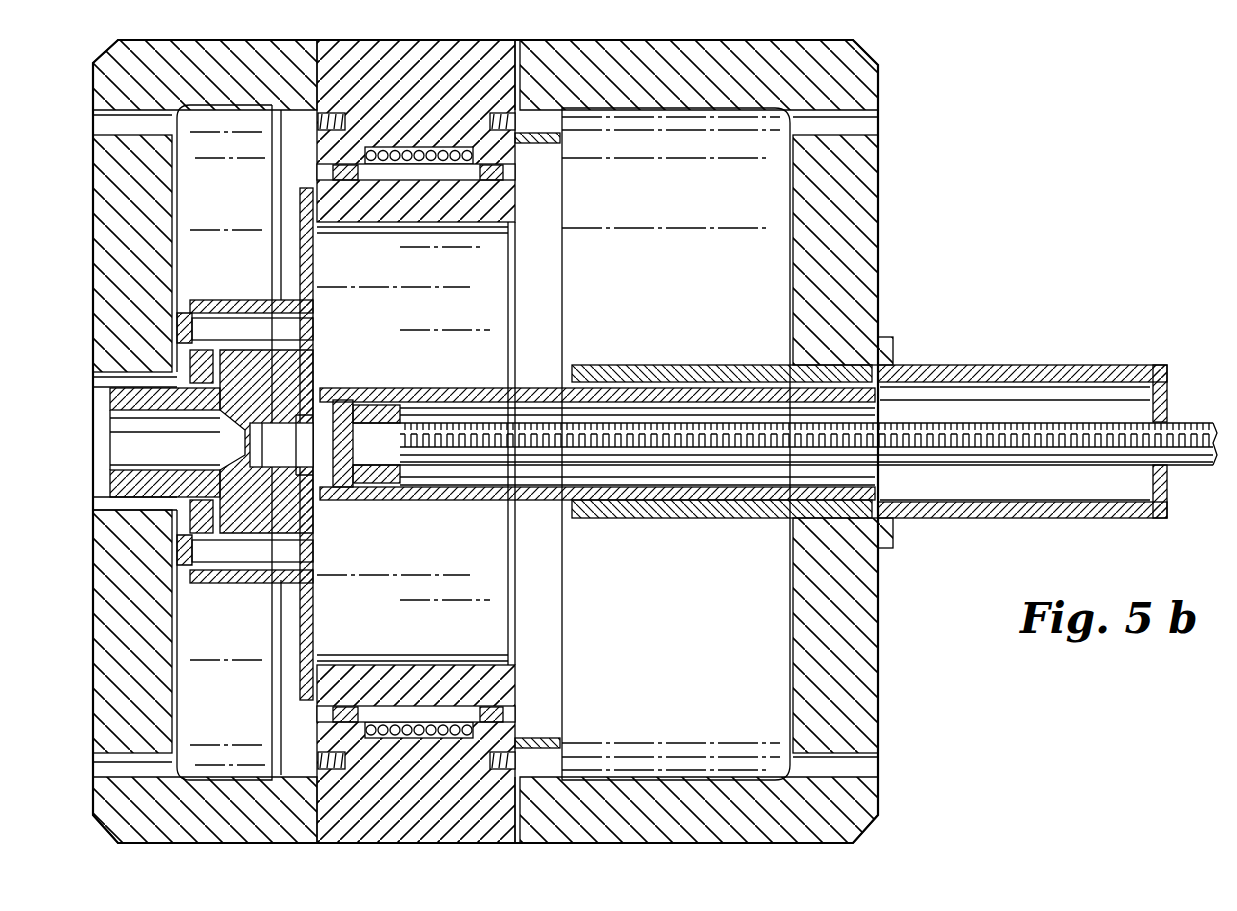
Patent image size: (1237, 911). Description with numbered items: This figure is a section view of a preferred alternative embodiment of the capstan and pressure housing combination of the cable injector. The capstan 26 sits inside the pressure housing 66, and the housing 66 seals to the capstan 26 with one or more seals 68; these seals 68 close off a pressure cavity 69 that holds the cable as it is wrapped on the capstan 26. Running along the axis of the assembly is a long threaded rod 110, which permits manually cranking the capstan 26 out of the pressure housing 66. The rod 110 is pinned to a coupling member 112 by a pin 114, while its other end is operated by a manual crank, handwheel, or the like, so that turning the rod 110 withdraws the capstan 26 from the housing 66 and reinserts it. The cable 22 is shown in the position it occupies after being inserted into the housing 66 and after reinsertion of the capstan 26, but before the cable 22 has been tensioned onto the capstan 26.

The cable 22 is at (520, 78).
The capstan 26 is at (458, 222).
The pressure housing 66 is at (455, 85).
The seals 68 is at (318, 173).
The pressure cavity 69 is at (520, 163).
The threaded rod 110 is at (1045, 435).
The coupling member 112 is at (373, 390).
The pin 114 is at (400, 484).